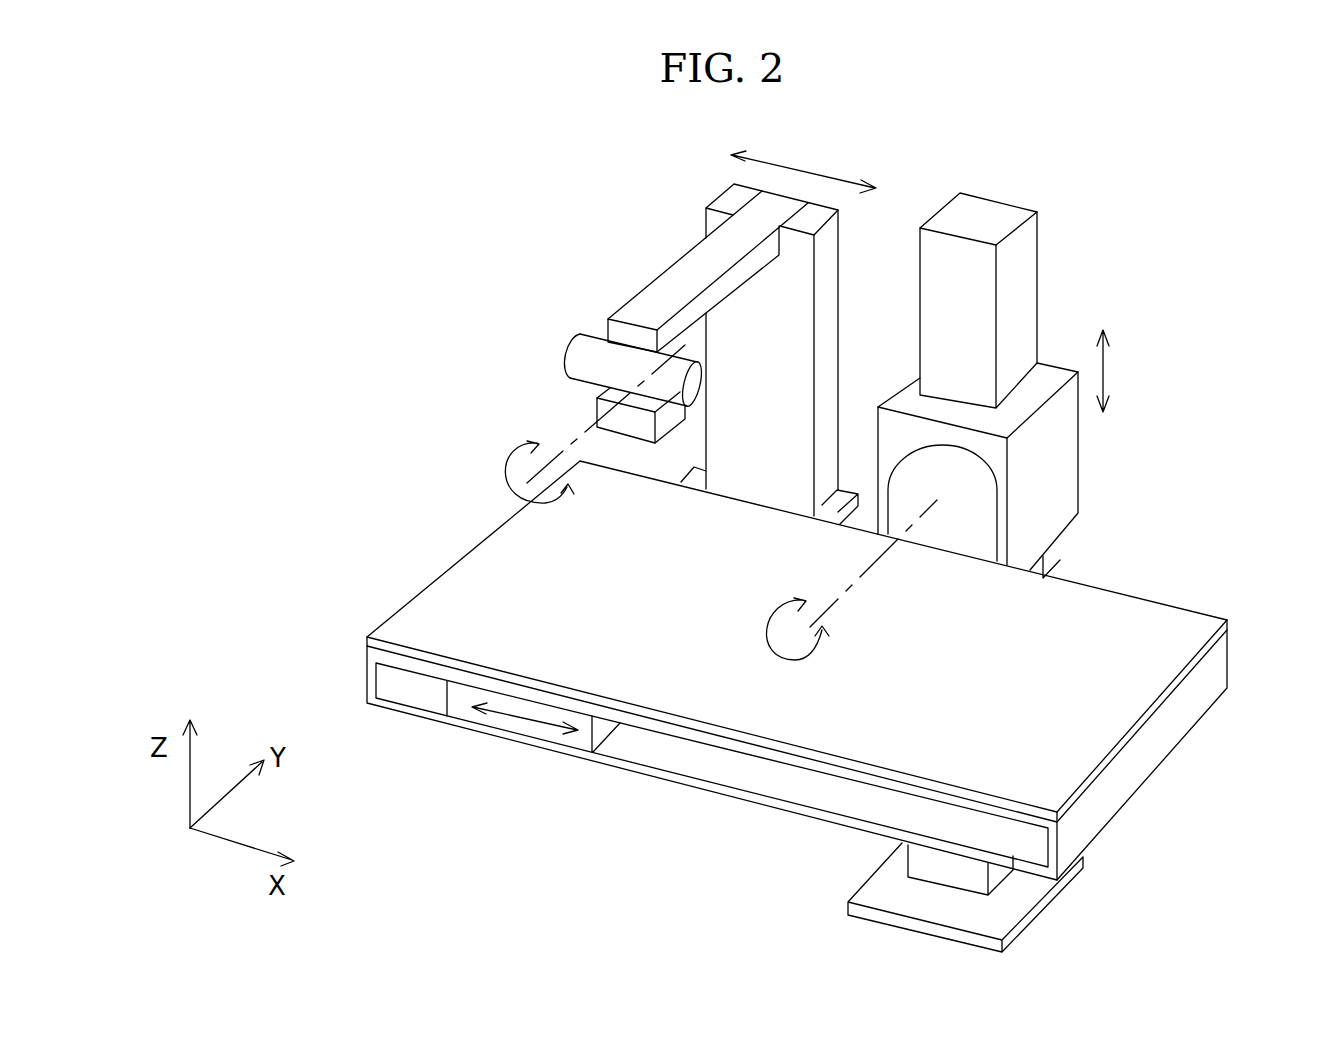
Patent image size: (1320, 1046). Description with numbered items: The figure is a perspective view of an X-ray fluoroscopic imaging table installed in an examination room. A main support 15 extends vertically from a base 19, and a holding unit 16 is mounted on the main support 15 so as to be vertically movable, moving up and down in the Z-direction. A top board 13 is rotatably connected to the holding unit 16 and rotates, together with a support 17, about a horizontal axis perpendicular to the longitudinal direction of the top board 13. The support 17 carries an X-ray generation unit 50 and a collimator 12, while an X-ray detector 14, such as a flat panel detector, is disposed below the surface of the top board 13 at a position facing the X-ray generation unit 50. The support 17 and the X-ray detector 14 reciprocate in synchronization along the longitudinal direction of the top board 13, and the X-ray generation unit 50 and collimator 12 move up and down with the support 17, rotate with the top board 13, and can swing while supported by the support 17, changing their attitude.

The collimator 12 is at (597, 405).
The top board 13 is at (1103, 722).
The X-ray detector 14 is at (532, 730).
The main support 15 is at (1020, 283).
The holding unit 16 is at (1057, 468).
The support 17 is at (830, 264).
The base 19 is at (1007, 900).
The X-ray generation unit 50 is at (577, 353).